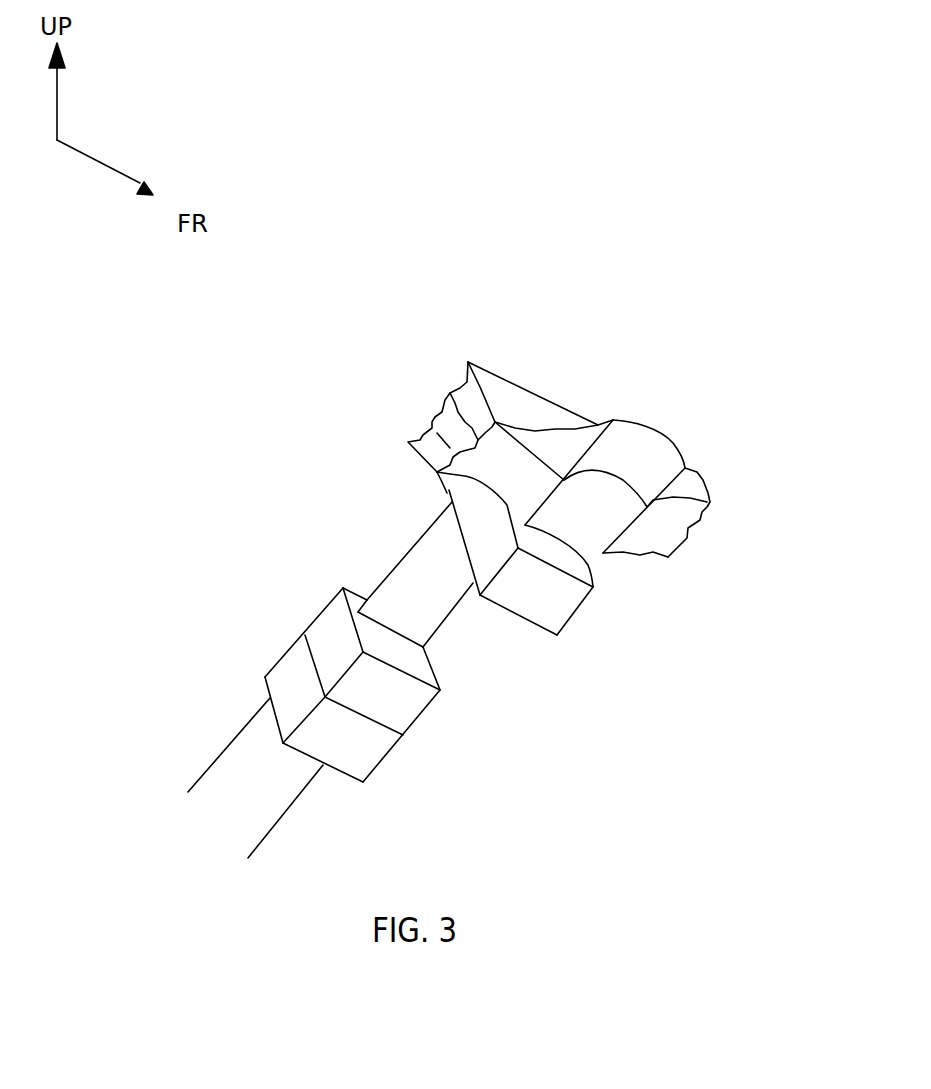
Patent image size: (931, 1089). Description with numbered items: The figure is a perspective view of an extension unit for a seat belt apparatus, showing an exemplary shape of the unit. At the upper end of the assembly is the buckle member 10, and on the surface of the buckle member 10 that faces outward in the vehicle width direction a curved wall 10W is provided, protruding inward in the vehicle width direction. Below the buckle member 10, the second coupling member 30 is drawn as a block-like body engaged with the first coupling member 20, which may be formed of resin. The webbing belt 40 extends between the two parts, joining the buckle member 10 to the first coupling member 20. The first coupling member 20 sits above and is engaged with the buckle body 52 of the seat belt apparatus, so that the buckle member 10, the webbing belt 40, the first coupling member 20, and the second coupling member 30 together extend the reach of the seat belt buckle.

The buckle member 10 is at (538, 420).
The curved wall 10W is at (640, 452).
The first coupling member 20 is at (403, 710).
The second coupling member 30 is at (550, 608).
The webbing belt 40 is at (438, 532).
The buckle body 52 is at (360, 758).